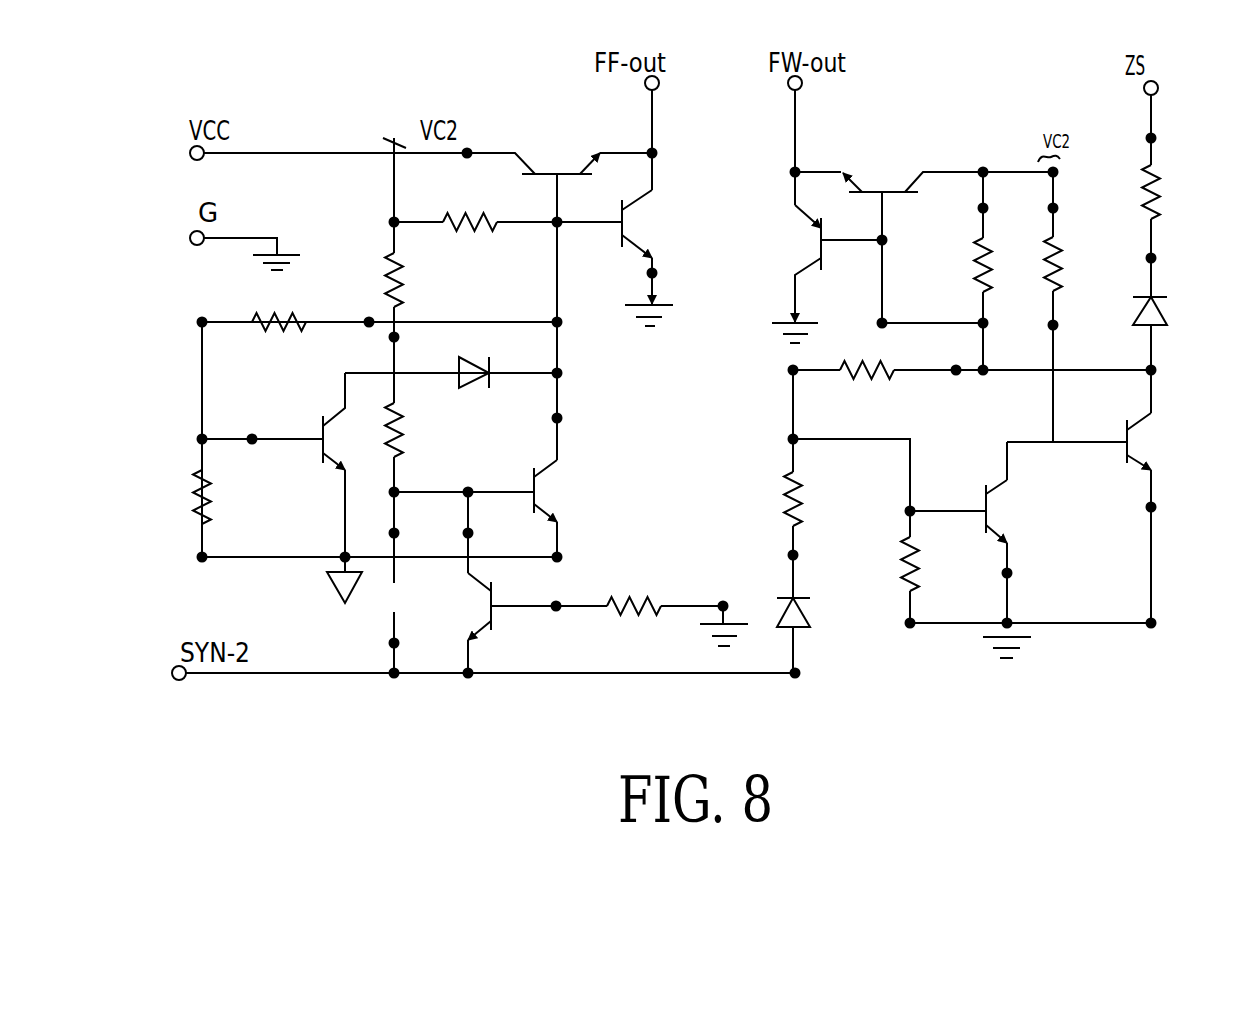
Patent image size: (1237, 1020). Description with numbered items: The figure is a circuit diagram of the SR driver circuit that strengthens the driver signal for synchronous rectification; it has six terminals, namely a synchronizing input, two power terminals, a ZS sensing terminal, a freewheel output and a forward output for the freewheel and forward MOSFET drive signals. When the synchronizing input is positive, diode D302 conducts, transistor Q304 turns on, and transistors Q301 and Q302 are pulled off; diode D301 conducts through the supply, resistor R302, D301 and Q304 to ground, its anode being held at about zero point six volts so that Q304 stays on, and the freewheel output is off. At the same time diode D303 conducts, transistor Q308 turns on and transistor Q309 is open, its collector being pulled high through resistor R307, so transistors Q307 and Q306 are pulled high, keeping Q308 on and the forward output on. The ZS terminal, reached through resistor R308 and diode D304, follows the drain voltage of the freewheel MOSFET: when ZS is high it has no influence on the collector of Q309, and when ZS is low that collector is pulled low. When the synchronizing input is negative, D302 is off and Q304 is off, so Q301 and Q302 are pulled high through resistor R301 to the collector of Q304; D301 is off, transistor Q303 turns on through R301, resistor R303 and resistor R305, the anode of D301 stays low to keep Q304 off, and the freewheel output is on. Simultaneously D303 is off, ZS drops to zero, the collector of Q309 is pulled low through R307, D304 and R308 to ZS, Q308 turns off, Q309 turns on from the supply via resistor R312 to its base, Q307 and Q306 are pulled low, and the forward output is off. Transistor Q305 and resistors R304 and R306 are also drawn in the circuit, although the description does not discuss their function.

The transistor Q301 is at (559, 156).
The transistor Q302 is at (623, 258).
The transistor Q303 is at (345, 465).
The transistor Q304 is at (567, 508).
The transistor Q305 is at (512, 619).
The transistor Q306 is at (822, 257).
The transistor Q307 is at (889, 170).
The transistor Q308 is at (1014, 511).
The transistor Q309 is at (1158, 441).
The resistor R301 is at (475, 212).
The resistor R302 is at (416, 280).
The resistor R303 is at (277, 339).
The resistor R304 is at (417, 430).
The resistor R305 is at (226, 497).
The resistor R306 is at (639, 590).
The resistor R307 is at (1007, 265).
The resistor R308 is at (1174, 192).
The resistor R312 is at (1075, 264).
The diode D301 is at (463, 361).
The diode D302 is at (347, 595).
The diode D303 is at (816, 612).
The diode D304 is at (1173, 315).